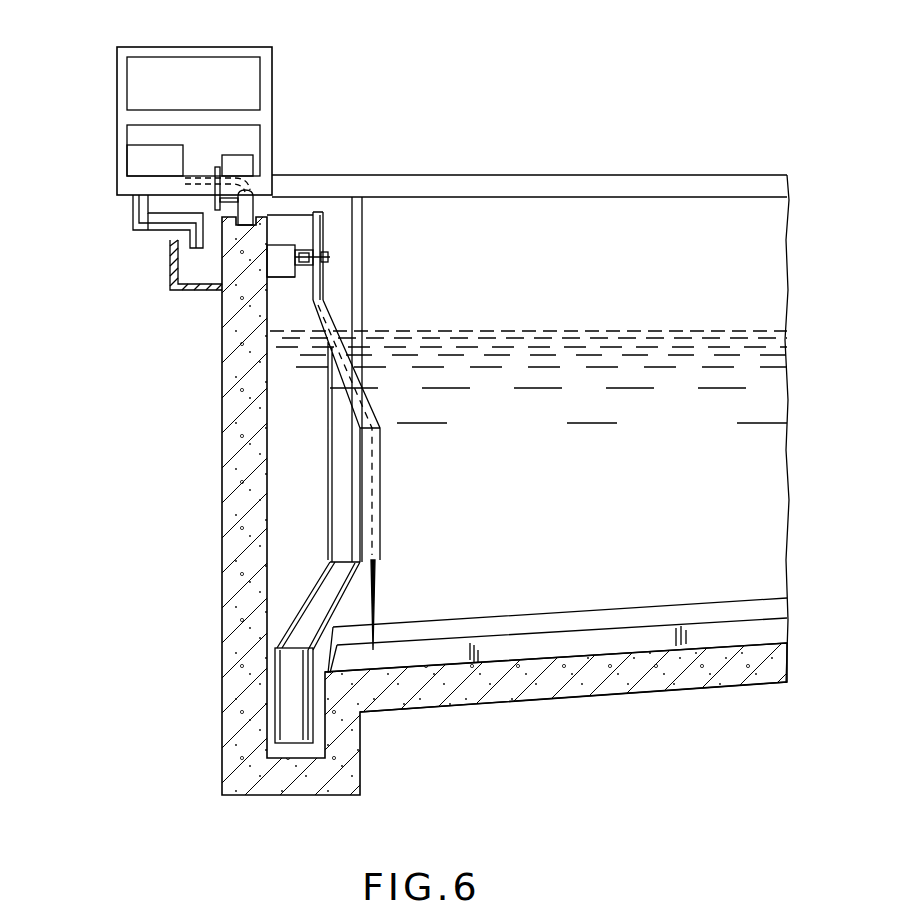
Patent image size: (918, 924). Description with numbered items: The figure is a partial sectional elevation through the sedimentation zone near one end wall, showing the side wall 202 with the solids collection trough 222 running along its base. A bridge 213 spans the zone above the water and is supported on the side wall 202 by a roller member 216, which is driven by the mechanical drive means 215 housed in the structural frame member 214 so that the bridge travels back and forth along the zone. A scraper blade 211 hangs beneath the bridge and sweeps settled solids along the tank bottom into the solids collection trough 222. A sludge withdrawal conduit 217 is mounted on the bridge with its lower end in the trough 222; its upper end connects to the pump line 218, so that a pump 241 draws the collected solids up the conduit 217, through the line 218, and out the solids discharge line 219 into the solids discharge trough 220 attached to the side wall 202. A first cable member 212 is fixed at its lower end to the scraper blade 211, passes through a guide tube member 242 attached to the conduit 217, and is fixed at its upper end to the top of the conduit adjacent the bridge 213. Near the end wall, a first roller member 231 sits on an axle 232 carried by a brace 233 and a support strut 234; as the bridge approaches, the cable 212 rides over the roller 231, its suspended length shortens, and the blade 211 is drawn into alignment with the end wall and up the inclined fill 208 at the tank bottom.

The side wall 202 is at (228, 515).
The fill 208 is at (495, 623).
The scraper blade 211 is at (578, 647).
The first cable member 212 is at (323, 290).
The bridge 213 is at (440, 180).
The structural frame member 214 is at (186, 30).
The mechanical drive means 215 is at (245, 165).
The roller member 216 is at (247, 210).
The sludge withdrawal conduit 217 is at (345, 508).
The pump line 218 is at (196, 177).
The solids discharge line 219 is at (150, 228).
The solids discharge trough 220 is at (170, 272).
The solids collection trough 222 is at (283, 748).
The first roller member 231 is at (308, 267).
The axle 232 is at (312, 250).
The brace 233 is at (320, 247).
The support strut 234 is at (282, 275).
The pump 241 is at (143, 160).
The guide tube member 242 is at (382, 466).